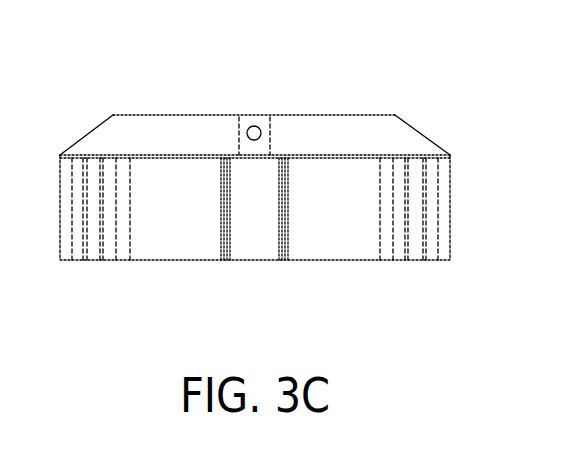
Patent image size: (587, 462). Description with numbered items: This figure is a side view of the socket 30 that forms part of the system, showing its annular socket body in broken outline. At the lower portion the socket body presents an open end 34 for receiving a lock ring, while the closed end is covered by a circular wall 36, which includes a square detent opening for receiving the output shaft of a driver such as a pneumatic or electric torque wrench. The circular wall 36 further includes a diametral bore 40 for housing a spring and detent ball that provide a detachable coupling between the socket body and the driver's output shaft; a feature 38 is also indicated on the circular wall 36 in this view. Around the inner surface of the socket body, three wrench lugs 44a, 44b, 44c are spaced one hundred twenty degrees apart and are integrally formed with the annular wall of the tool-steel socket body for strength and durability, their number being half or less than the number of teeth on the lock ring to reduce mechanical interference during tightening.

The socket 30 is at (271, 169).
The open end 34 is at (337, 252).
The circular wall 36 is at (410, 140).
The hidden slot 38 is at (242, 118).
The diametral bore 40 is at (258, 127).
The wrench lug 44a is at (95, 254).
The wrench lug 44b is at (415, 252).
The wrench lug 44c is at (247, 252).